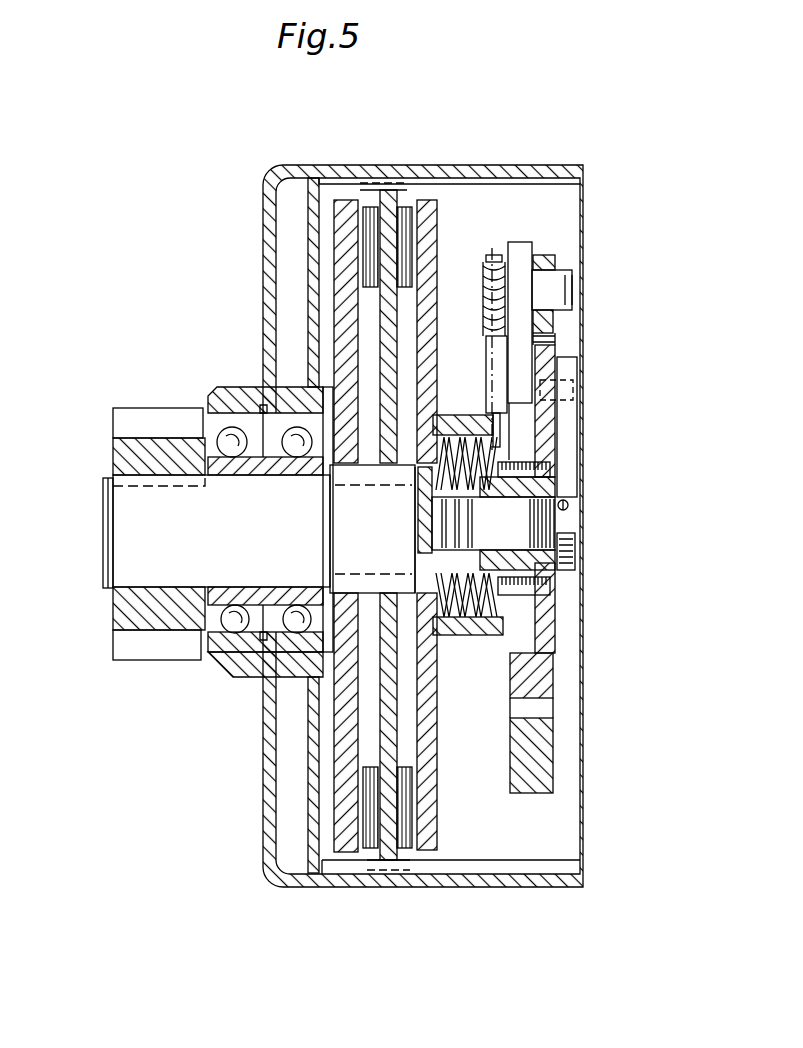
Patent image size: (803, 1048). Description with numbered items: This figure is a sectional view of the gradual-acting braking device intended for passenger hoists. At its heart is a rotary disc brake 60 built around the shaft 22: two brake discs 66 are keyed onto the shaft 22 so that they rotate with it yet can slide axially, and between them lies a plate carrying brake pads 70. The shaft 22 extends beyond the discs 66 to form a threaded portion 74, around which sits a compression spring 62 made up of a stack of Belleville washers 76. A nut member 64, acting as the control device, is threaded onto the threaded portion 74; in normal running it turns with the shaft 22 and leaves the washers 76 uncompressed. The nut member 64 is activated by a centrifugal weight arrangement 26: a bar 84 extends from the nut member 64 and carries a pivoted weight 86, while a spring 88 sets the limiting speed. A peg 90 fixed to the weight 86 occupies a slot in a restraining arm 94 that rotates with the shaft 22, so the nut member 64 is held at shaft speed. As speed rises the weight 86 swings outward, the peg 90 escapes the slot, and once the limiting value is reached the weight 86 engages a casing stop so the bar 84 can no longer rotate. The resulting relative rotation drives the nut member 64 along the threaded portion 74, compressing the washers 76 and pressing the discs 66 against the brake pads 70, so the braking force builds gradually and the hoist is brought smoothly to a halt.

The shaft 22 is at (219, 548).
The centrifugal weight arrangement 26 is at (570, 327).
The rotary disc brake 60 is at (440, 676).
The compression spring 62 is at (440, 477).
The nut member 64 is at (552, 580).
The brake discs 66 is at (340, 231).
The brake pads 70 is at (405, 252).
The threaded portion 74 is at (520, 528).
The Belleville washers 76 is at (492, 625).
The bar 84 is at (547, 450).
The pivoted weight 86 is at (515, 355).
The spring 88 is at (486, 283).
The peg 90 is at (572, 390).
The restraining arm 94 is at (563, 445).